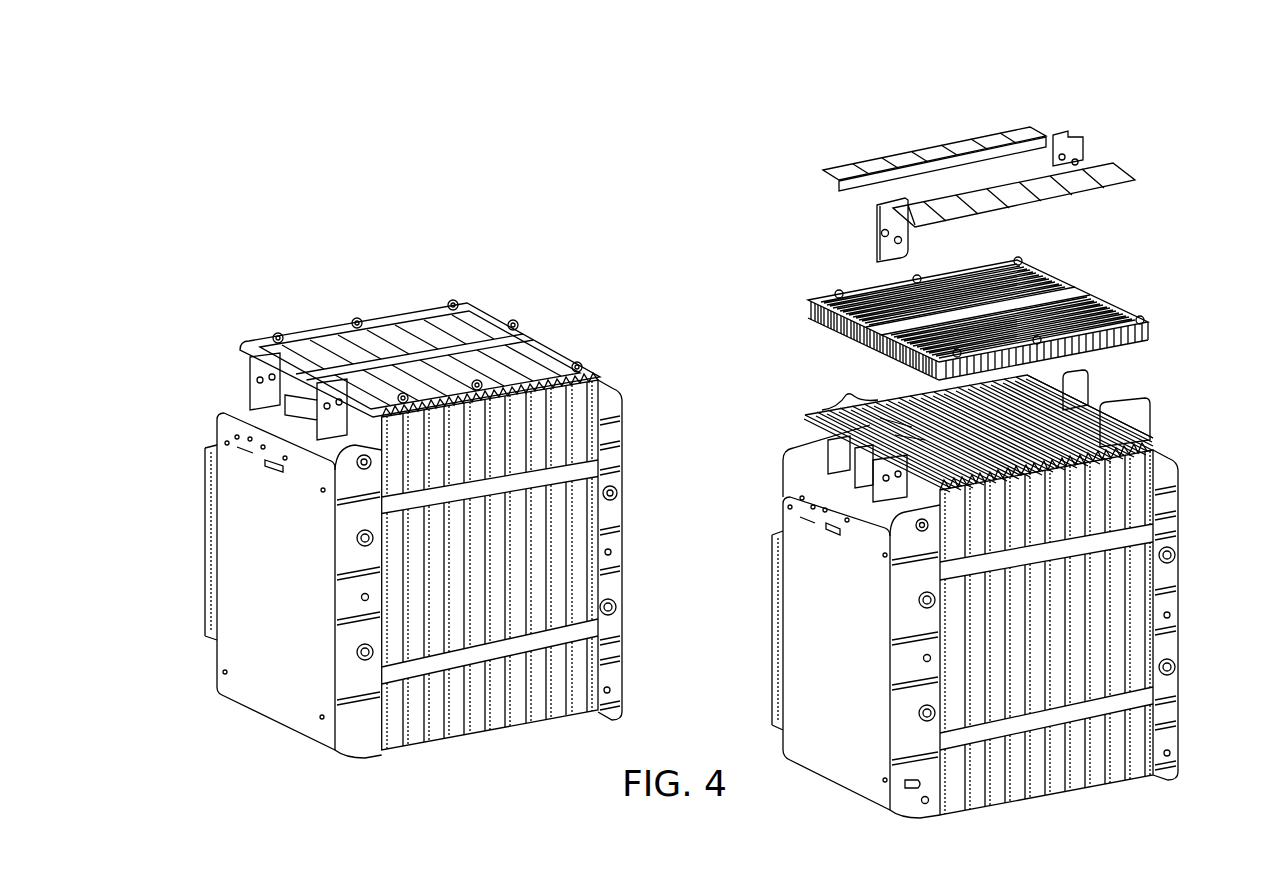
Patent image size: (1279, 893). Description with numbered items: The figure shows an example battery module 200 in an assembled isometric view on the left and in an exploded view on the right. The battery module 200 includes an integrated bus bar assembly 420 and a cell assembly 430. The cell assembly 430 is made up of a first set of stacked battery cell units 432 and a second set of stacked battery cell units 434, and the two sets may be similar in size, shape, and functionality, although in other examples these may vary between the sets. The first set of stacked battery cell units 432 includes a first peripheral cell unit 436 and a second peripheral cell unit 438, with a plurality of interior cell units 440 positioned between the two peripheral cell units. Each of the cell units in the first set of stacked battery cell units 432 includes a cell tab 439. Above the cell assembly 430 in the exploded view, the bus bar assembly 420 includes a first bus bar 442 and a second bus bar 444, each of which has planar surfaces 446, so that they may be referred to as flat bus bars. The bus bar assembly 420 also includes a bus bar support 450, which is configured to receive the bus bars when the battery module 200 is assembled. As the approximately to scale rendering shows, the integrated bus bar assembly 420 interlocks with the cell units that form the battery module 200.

The battery module 200 is at (366, 284).
The bus bar assembly 420 is at (1027, 226).
The cell assembly 430 is at (1205, 518).
The first set of stacked battery cell units 432 is at (945, 429).
The second set of stacked battery cell units 434 is at (1038, 488).
The first peripheral cell unit 436 is at (822, 425).
The second peripheral cell unit 438 is at (1040, 392).
The cell tab 439 is at (895, 435).
The interior cell units 440 is at (850, 387).
The first bus bar 442 is at (979, 152).
The second bus bar 444 is at (1003, 222).
The planar surfaces 446 is at (972, 150).
The bus bar support 450 is at (1155, 313).